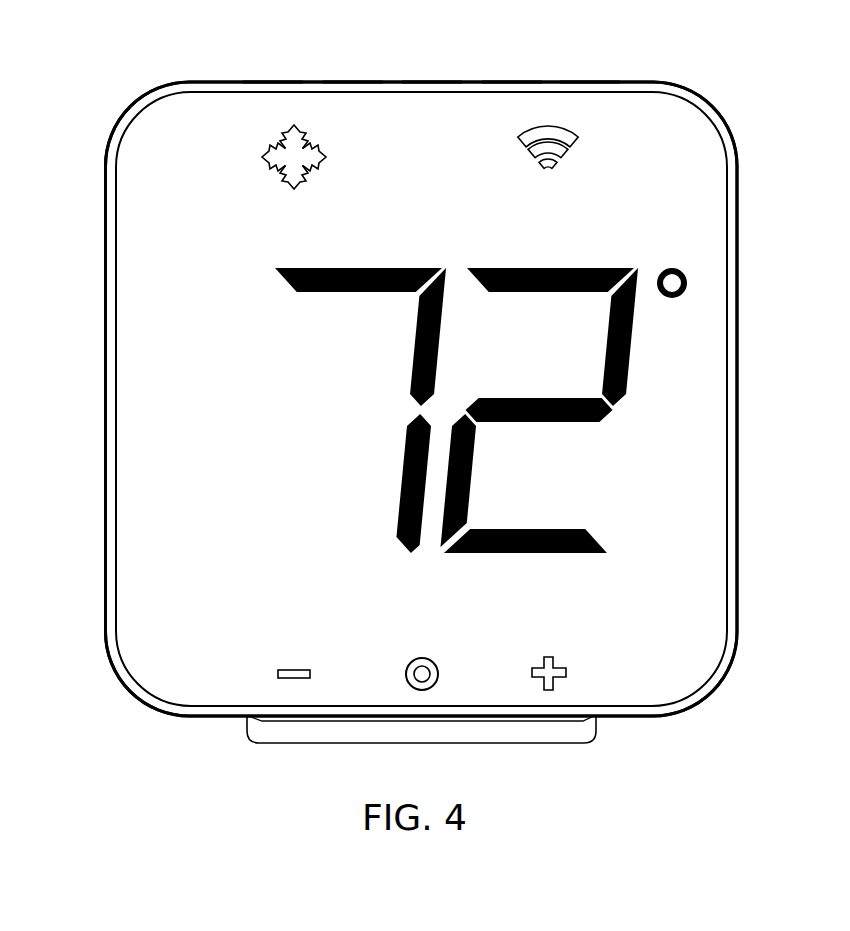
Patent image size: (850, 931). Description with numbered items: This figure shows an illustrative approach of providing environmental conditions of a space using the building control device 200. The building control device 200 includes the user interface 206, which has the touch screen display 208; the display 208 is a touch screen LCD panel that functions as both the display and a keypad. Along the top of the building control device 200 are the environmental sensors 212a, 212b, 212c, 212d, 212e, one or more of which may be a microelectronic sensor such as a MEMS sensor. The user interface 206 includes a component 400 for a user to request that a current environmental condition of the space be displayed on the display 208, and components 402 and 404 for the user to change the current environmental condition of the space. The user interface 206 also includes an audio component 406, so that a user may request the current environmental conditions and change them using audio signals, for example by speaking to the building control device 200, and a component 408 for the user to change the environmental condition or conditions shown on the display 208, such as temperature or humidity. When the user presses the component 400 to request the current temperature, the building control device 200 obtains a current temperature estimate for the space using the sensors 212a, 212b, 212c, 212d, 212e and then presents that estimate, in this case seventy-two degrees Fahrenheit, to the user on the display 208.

The building control device 200 is at (742, 88).
The user interface 206 is at (140, 540).
The display 208 is at (133, 273).
The environmental sensor 212a is at (263, 82).
The environmental sensor 212b is at (343, 82).
The environmental sensor 212c is at (422, 82).
The environmental sensor 212d is at (502, 82).
The environmental sensor 212e is at (580, 82).
The component 400 is at (422, 657).
The component 402 is at (549, 657).
The component 404 is at (293, 668).
The audio component 406 is at (549, 170).
The component 408 is at (285, 172).